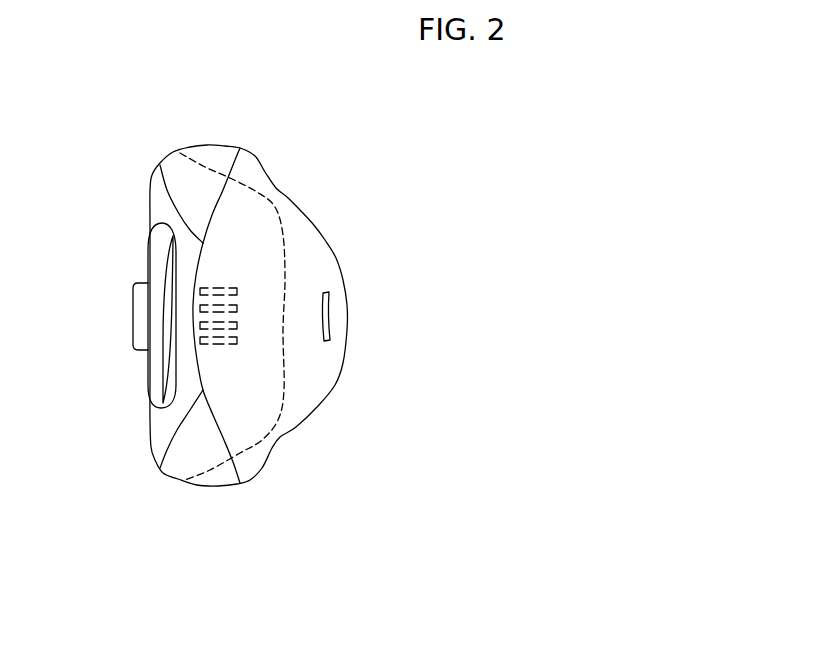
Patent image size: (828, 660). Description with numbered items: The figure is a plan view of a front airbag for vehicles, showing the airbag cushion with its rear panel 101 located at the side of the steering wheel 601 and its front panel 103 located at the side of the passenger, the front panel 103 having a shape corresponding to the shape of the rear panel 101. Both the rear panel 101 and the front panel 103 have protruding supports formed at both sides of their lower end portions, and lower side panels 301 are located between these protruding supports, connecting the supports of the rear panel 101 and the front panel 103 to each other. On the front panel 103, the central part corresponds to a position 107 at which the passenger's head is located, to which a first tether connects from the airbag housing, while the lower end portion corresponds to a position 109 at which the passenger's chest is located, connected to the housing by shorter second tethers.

The rear panel 101 is at (163, 425).
The front panel 103 is at (317, 383).
The position at which the passenger's head is located 107 is at (330, 313).
The position at which the passenger's chest is located 109 is at (227, 290).
The lower side panels 301 is at (180, 167).
The steering wheel 601 is at (153, 364).